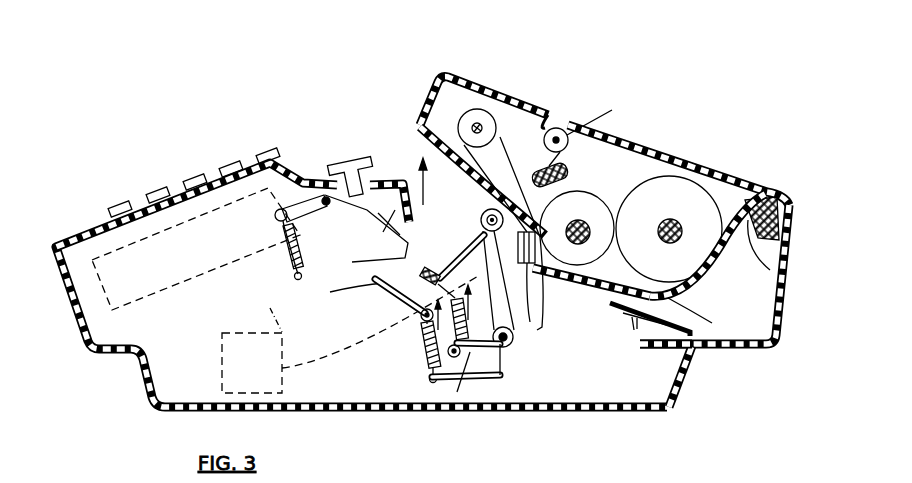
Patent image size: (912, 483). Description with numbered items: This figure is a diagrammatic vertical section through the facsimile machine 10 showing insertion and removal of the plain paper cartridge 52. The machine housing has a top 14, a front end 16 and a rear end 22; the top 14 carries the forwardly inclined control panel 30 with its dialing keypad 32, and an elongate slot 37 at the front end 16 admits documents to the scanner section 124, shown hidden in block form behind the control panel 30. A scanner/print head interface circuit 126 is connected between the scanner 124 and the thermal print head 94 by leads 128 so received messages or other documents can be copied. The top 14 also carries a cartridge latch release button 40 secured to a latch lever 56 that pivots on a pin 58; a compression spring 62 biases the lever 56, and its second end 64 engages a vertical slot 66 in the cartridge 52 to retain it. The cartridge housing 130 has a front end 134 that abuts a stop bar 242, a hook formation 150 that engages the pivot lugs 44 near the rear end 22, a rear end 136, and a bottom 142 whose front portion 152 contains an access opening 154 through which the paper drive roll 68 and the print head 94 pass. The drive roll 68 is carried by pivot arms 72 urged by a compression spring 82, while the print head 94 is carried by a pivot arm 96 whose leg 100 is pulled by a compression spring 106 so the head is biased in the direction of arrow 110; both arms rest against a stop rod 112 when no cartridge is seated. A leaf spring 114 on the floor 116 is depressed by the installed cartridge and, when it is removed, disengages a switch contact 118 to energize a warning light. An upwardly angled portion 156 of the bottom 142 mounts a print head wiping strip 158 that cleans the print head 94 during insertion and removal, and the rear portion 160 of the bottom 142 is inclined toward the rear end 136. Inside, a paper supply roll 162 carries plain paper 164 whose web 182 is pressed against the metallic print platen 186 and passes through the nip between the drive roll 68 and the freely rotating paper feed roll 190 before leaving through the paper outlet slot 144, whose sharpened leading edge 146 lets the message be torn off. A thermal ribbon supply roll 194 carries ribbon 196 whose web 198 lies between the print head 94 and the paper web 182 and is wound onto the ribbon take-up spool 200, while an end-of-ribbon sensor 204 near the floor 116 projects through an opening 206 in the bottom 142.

The facsimile machine 10 is at (117, 172).
The top 14 is at (297, 182).
The front end 16 is at (63, 292).
The rear end 22 is at (772, 346).
The control panel 30 is at (83, 242).
The dialing keypad 32 is at (240, 164).
The elongate slot 37 is at (77, 318).
The cartridge latch release button 40 is at (345, 168).
The pivot lugs 44 is at (790, 275).
The plain paper cartridge 52 is at (707, 135).
The latch lever 56 is at (365, 247).
The pin 58 is at (328, 207).
The compression spring 62 is at (278, 245).
The second end 64 is at (410, 285).
The vertical slot 66 is at (420, 118).
The paper drive roll 68 is at (480, 217).
The pivot arms 72 is at (520, 378).
The compression spring 82 is at (423, 340).
The thermal print head 94 is at (487, 260).
The pivot arm 96 is at (478, 235).
The leg 100 is at (458, 390).
The compression spring 106 is at (415, 312).
The arrow 110 is at (655, 355).
The stop rod 112 is at (533, 320).
The leaf spring 114 is at (590, 320).
The floor 116 is at (722, 352).
The switch contact 118 is at (630, 335).
The scanner section 124 is at (190, 280).
The scanner/print head interface circuit 126 is at (252, 363).
The leads 128 is at (328, 345).
The cartridge housing 130 is at (760, 196).
The front end 134 is at (445, 78).
The rear end 136 is at (717, 277).
The bottom 142 is at (700, 321).
The paper outlet slot 144 is at (577, 116).
The leading edge 146 is at (545, 124).
The hook formation 150 is at (784, 241).
The front portion 152 is at (418, 137).
The access opening 154 is at (478, 185).
The upwardly angled portion 156 is at (577, 228).
The print head wiping strip 158 is at (543, 305).
The rear portion 160 is at (688, 297).
The paper supply roll 162 is at (669, 229).
The plain paper 164 is at (700, 195).
The web 182 is at (645, 165).
The print platen 186 is at (562, 162).
The paper feed roll 190 is at (612, 118).
The thermal ribbon supply roll 194 is at (605, 243).
The ribbon 196 is at (477, 121).
The web 198 is at (420, 133).
The ribbon take-up spool 200 is at (470, 82).
The end-of-ribbon sensor 204 is at (640, 265).
The opening 206 is at (550, 290).
The stop bar 242 is at (344, 287).